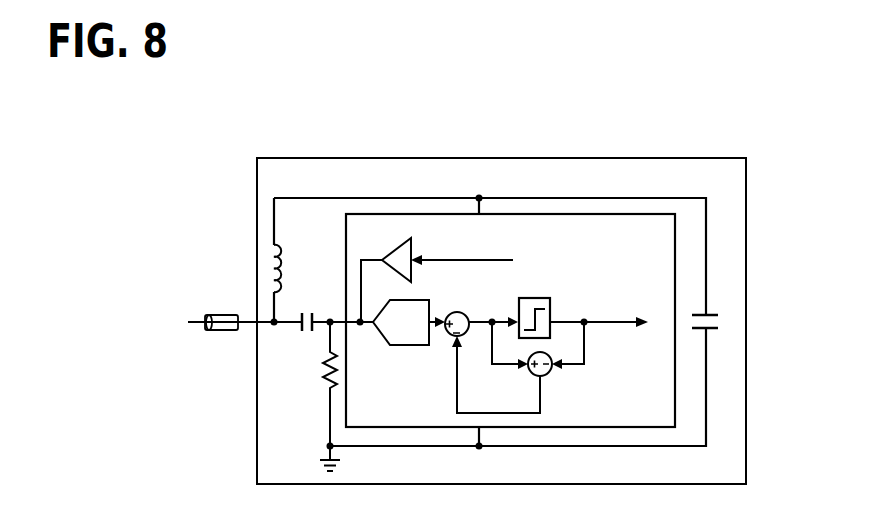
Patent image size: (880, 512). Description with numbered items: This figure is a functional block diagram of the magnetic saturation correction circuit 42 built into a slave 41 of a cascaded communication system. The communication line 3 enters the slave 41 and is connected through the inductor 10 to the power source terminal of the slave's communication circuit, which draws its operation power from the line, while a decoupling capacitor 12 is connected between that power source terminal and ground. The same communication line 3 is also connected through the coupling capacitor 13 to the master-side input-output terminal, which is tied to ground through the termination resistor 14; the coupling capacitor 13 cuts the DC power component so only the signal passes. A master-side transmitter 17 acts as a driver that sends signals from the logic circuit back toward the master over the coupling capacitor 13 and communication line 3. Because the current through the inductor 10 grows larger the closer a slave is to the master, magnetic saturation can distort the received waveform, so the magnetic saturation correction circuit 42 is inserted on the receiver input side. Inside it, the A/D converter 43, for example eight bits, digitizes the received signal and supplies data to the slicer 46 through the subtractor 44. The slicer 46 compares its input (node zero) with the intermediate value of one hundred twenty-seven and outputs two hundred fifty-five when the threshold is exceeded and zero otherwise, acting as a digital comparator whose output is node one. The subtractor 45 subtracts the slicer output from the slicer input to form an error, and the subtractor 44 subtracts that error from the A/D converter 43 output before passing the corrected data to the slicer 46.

The communication line 3 is at (222, 313).
The inductor 10 is at (284, 270).
The decoupling capacitor 12 is at (712, 312).
The coupling capacitor 13 is at (309, 312).
The termination resistor 14 is at (323, 372).
The master-side transmitter 17 is at (397, 250).
The slave 41 is at (450, 158).
The magnetic saturation correction circuit 42 is at (547, 260).
The A/D converter 43 is at (400, 348).
The subtractor 44 is at (453, 311).
The subtractor 45 is at (552, 369).
The slicer 46 is at (552, 332).